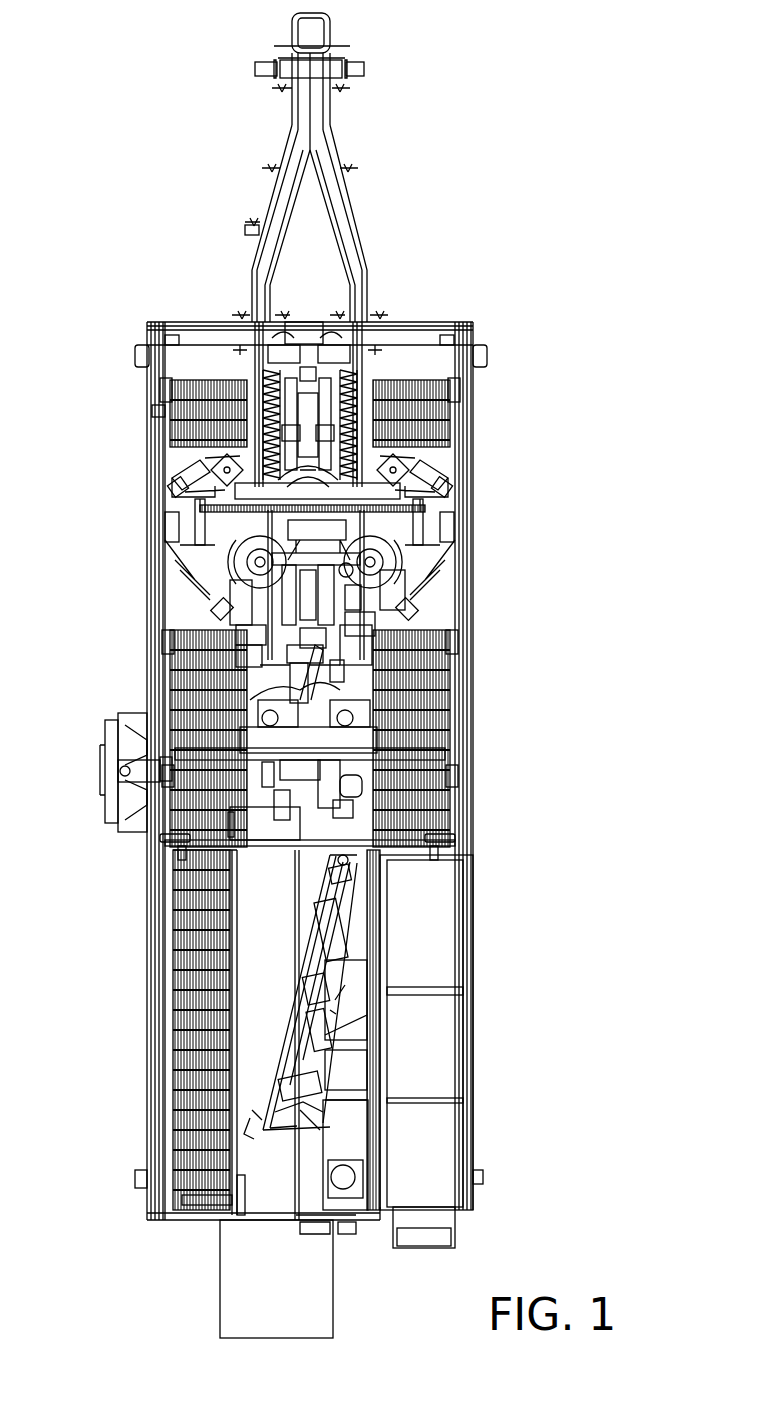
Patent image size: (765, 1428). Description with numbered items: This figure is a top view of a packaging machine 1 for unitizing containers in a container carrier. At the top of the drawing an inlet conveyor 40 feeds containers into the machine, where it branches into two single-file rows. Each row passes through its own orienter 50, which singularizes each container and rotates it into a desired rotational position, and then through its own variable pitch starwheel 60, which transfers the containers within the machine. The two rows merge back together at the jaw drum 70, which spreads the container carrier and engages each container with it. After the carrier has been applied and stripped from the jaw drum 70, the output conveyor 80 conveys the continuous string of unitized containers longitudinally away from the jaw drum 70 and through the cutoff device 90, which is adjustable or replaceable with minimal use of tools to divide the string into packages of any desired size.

The tie plate handling apparatus 1 is at (560, 352).
The inlet conveyor 40 is at (327, 125).
The orienter 50 is at (173, 470).
The variable pitch starwheel 60 is at (230, 560).
The jaw drum 70 is at (383, 630).
The output conveyor 80 is at (263, 923).
The cutoff device 90 is at (343, 983).